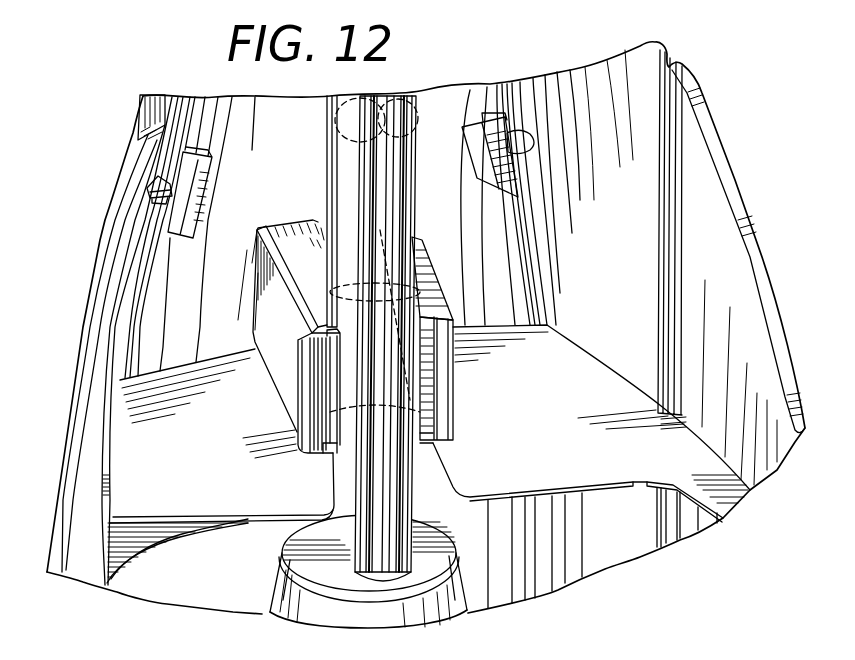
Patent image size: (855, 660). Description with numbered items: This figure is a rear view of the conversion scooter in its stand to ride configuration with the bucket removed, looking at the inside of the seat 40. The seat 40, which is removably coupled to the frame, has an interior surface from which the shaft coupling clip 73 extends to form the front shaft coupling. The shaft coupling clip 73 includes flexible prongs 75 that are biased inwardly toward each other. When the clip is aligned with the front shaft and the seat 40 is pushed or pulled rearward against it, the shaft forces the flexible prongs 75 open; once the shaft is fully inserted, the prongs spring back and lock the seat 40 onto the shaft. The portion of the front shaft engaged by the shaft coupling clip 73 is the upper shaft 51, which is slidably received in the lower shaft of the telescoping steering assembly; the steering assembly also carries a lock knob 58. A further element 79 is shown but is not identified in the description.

The seat 40 is at (715, 148).
The post 79 is at (423, 237).
The shaft coupling clip 73 is at (287, 343).
The flexible prongs 75 is at (305, 432).
The upper shaft 51 is at (337, 538).
The lock knob 58 is at (468, 612).